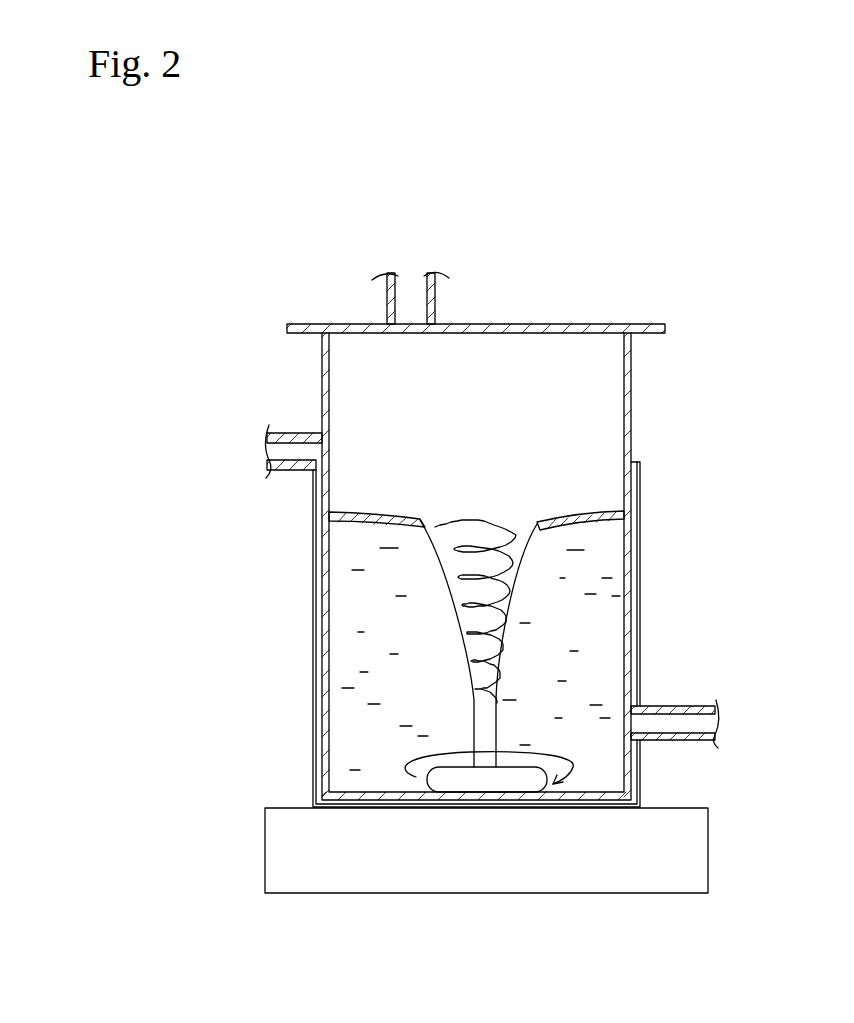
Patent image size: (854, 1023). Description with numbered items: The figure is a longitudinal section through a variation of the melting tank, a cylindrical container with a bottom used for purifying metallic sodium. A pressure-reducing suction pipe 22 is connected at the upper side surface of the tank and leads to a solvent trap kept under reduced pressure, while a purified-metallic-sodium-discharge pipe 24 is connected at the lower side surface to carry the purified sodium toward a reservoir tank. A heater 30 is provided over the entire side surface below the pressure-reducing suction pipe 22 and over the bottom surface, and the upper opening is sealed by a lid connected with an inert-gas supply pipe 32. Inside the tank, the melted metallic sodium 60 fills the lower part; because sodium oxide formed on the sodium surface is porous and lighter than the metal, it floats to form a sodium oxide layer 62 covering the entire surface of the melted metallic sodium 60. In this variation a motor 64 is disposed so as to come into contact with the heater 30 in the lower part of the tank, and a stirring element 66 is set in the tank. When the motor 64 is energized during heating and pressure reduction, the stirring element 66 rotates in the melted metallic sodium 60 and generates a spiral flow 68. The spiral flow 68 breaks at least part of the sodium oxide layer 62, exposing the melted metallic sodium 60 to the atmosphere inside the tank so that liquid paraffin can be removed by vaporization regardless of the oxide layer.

The pressure-reducing suction pipe 22 is at (290, 432).
The purified-metallic-sodium-discharge pipe 24 is at (673, 711).
The heater 30 is at (313, 732).
The inert-gas supply pipe 32 is at (438, 297).
The melted metallic sodium 60 is at (610, 596).
The sodium oxide layer 62 is at (370, 512).
The motor 64 is at (690, 852).
The stirring element 66 is at (443, 782).
The spiral flow 68 is at (500, 637).